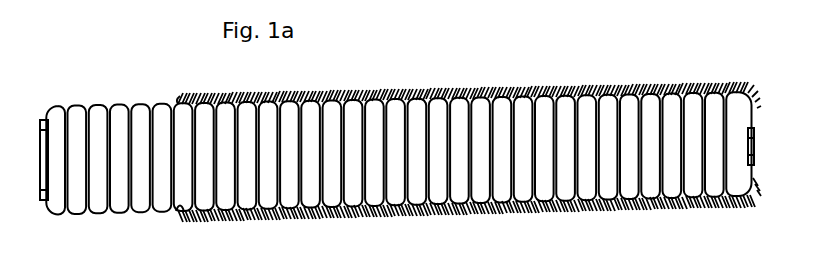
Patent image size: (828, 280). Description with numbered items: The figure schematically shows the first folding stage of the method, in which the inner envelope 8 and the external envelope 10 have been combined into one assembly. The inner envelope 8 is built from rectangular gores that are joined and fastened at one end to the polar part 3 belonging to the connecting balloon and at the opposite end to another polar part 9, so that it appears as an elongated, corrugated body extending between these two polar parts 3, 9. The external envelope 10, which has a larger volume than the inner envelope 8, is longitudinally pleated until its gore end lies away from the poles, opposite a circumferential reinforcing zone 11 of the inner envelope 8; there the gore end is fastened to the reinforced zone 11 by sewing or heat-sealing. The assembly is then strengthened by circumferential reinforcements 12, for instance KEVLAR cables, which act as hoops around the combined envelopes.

The inner envelope 8 is at (98, 110).
The polar part 9 is at (40, 196).
The polar part 3 is at (752, 150).
The external envelope 10 is at (404, 217).
The circumferential reinforcing zone 11 is at (183, 207).
The circumferential reinforcements 12 is at (177, 211).